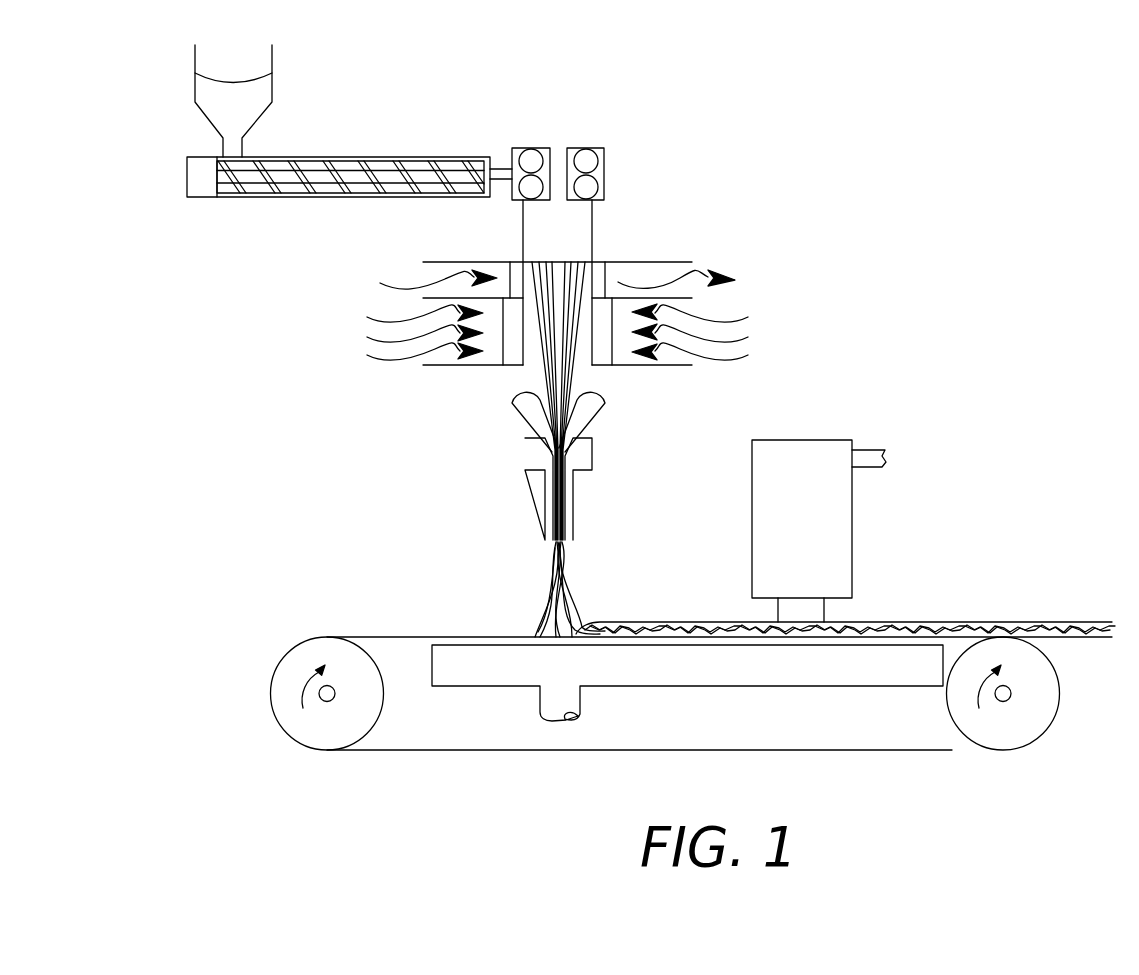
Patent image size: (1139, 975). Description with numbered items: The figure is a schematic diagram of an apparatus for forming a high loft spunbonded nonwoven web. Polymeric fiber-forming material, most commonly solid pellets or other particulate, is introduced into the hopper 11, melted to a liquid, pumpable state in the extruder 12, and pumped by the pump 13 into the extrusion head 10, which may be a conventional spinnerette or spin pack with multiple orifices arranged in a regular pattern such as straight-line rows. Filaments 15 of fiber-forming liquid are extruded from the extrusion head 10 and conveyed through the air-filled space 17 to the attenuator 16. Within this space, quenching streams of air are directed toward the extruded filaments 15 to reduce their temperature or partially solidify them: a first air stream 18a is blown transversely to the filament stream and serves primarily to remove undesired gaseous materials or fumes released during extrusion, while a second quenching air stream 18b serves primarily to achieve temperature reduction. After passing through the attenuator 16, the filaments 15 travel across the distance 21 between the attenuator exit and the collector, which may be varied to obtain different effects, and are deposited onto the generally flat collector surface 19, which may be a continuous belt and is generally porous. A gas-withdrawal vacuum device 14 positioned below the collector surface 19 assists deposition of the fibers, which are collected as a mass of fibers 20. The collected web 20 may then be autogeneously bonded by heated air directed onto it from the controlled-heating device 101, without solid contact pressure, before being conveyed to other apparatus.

The extrusion head 10 is at (583, 232).
The hopper 11 is at (258, 95).
The extruder 12 is at (343, 155).
The pump 13 is at (542, 148).
The gas-withdrawal (vacuum) device 14 is at (653, 677).
The filaments 15 is at (543, 371).
The attenuator 16 is at (628, 388).
The air-filled space 17 is at (350, 265).
The first air stream 18a is at (705, 270).
The second quenching air stream 18b is at (745, 315).
The collector surface 19 is at (402, 637).
The mass of fibers 20 is at (1042, 622).
The distance 21 is at (527, 542).
The controlled-heating device 101 is at (800, 448).